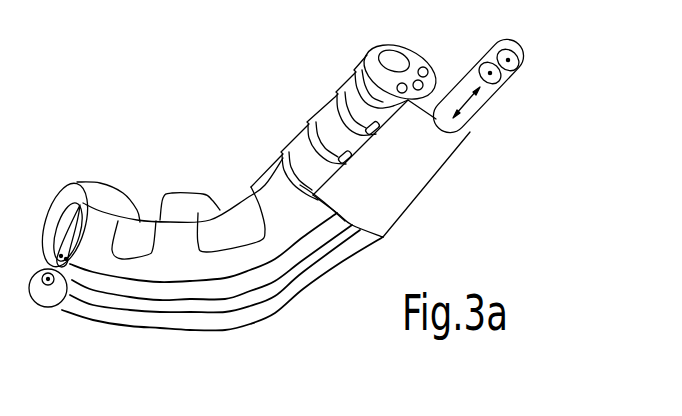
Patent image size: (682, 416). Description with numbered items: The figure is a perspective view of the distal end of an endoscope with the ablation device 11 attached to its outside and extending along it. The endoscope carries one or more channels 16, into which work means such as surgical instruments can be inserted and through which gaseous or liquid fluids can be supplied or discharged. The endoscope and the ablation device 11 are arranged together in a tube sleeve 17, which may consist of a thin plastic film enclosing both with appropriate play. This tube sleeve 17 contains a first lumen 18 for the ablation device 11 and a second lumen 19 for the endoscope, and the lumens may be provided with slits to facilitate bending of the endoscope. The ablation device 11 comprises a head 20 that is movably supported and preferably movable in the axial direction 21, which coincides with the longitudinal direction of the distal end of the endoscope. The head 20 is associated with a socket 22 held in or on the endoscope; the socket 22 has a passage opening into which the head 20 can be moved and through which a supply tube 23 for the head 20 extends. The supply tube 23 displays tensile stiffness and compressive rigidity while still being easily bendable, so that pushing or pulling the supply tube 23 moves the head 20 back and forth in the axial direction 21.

The ablation device 11 is at (522, 160).
The channel 16 is at (402, 53).
The tube sleeve 17 is at (312, 302).
The first lumen 18 is at (47, 297).
The second lumen 19 is at (72, 199).
The head 20 is at (517, 91).
The axial direction 21 is at (470, 105).
The socket 22 is at (409, 183).
The supply tube 23 is at (241, 300).